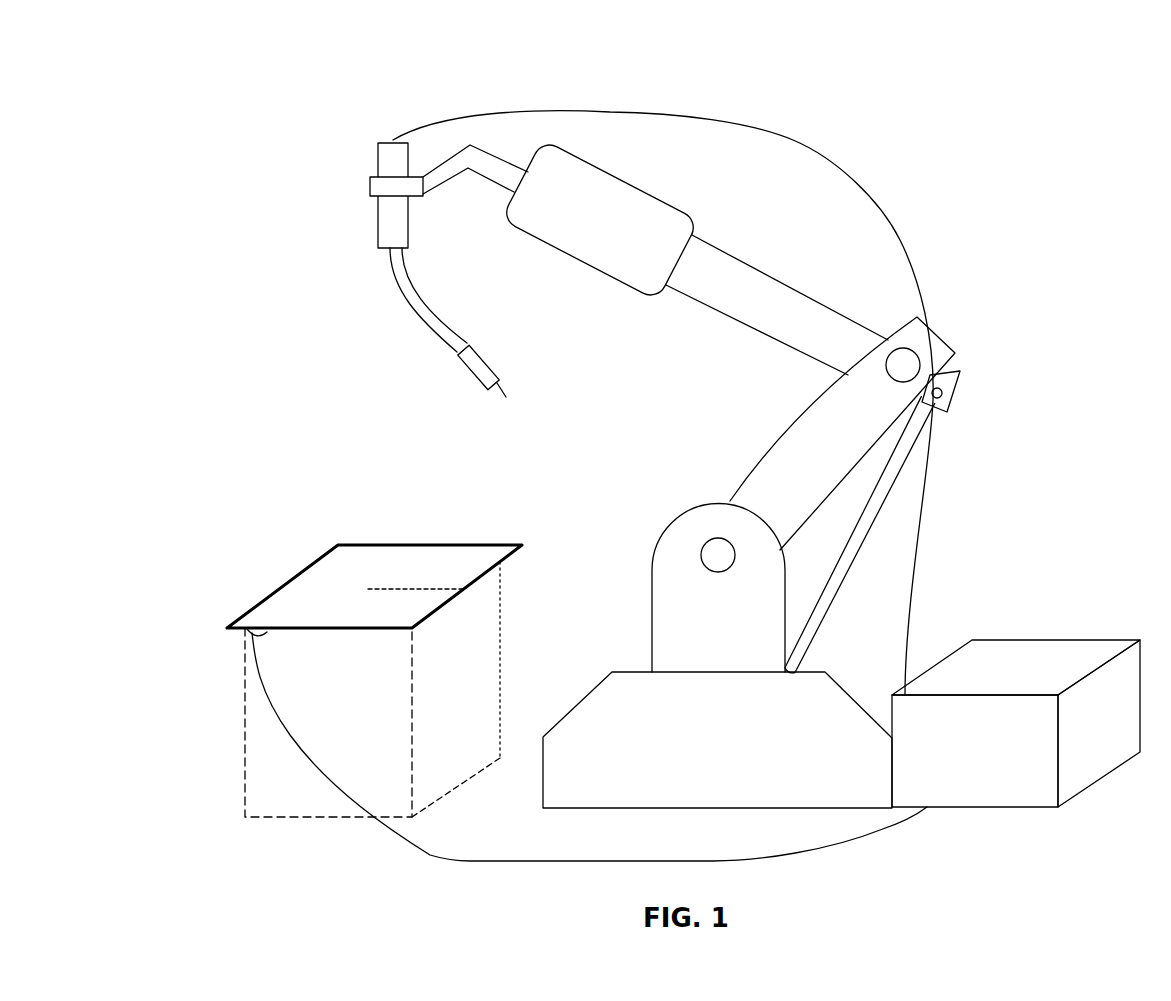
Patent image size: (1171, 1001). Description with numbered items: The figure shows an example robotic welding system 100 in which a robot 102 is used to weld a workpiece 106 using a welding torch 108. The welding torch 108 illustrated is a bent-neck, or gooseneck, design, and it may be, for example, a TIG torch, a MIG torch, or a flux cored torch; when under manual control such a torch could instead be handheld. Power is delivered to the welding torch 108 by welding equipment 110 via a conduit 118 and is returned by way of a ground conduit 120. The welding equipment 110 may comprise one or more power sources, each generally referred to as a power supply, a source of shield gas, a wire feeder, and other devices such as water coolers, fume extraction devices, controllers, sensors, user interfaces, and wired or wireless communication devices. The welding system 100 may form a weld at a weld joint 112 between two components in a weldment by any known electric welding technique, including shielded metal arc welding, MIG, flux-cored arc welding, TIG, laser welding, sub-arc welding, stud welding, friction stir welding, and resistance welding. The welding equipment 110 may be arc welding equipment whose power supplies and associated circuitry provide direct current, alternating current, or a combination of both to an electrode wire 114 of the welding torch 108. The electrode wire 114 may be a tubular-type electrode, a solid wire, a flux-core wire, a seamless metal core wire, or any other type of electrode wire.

The welding system 100 is at (148, 80).
The robot 102 is at (955, 62).
The workpiece 106 is at (292, 597).
The welding torch 108 is at (406, 422).
The welding equipment 110 is at (1017, 638).
The weld joint 112 is at (410, 590).
The electrode wire 114 is at (508, 396).
The conduit 118 is at (848, 182).
The ground conduit 120 is at (490, 858).